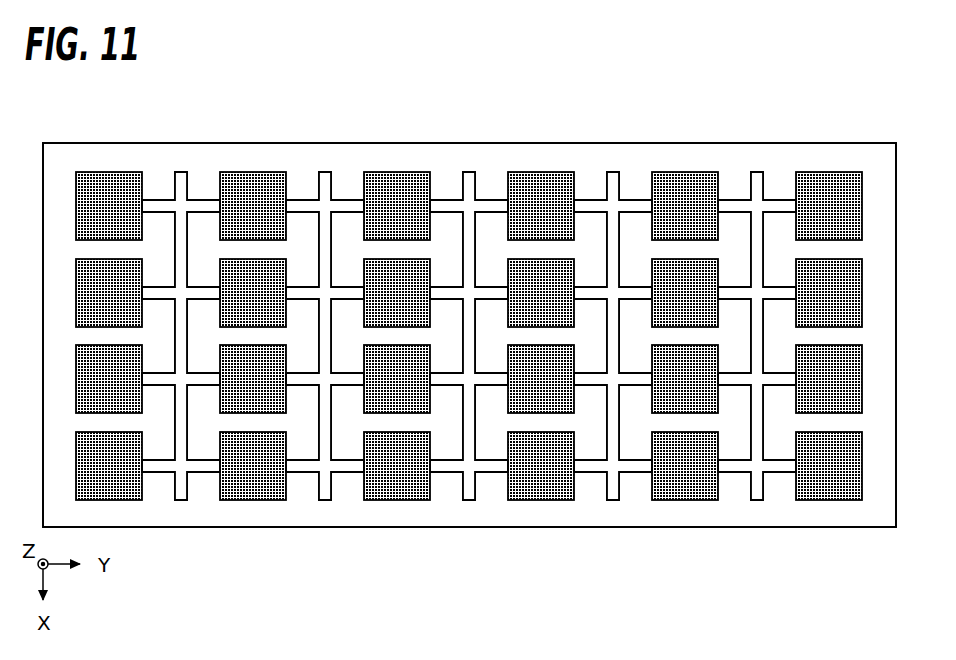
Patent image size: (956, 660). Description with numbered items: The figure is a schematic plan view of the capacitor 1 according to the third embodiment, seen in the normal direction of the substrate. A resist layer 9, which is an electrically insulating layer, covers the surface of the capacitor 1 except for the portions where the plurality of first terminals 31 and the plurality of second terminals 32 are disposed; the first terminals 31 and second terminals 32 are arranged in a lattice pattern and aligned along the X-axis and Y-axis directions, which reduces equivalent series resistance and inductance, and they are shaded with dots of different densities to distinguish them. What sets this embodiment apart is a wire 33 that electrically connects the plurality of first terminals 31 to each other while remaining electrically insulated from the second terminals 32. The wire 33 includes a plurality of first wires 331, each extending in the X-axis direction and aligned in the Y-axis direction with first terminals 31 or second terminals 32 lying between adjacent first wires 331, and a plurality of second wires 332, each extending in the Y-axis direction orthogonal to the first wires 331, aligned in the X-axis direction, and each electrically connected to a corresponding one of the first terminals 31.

The capacitor 1 is at (878, 128).
The resist layer 9 is at (590, 155).
The first terminal 31 is at (712, 310).
The second terminal 32 is at (685, 179).
The wire 33 is at (469, 321).
The first wire 331 is at (323, 337).
The second wire 332 is at (457, 292).